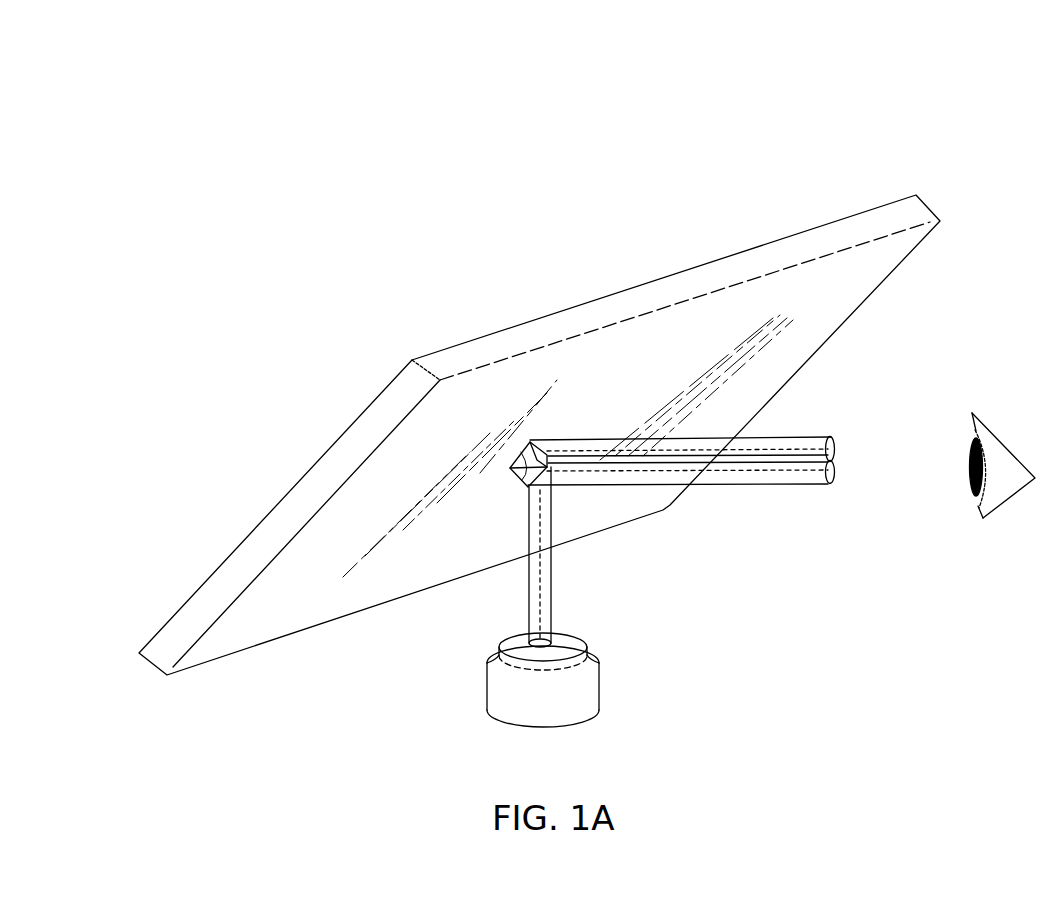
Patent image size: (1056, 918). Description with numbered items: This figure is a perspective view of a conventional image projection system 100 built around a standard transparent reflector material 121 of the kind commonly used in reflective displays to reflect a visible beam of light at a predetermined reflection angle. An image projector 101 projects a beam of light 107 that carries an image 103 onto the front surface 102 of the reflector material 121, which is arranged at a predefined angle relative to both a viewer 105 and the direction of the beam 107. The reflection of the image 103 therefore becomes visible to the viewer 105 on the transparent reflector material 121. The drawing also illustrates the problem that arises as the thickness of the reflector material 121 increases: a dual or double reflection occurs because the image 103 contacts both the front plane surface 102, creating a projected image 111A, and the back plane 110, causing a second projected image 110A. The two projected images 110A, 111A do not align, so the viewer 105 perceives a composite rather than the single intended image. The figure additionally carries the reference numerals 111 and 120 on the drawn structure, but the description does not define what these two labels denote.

The image projection system 100 is at (422, 175).
The image projector 101 is at (597, 696).
The front surface 102 is at (335, 610).
The image 103 is at (550, 607).
The viewer 105 is at (1003, 471).
The beam of light 107 is at (555, 613).
The back plane 110 is at (510, 468).
The projected image 110A is at (800, 438).
The joint lower portion 111 is at (528, 487).
The projected image 111A is at (803, 480).
The support arm 120 is at (835, 461).
The transparent reflector material 121 is at (756, 265).